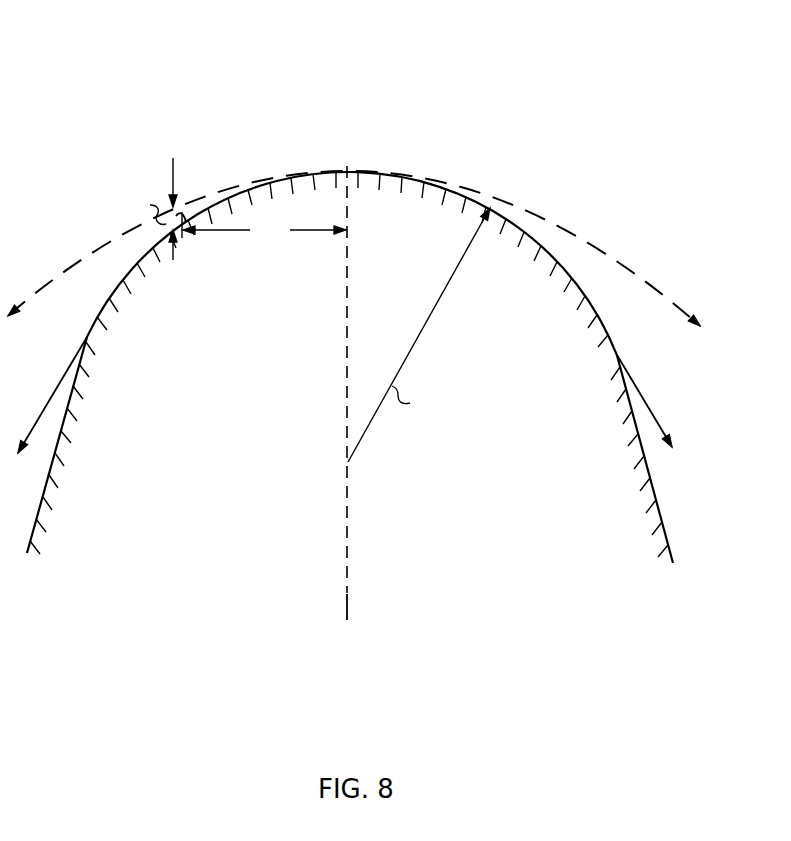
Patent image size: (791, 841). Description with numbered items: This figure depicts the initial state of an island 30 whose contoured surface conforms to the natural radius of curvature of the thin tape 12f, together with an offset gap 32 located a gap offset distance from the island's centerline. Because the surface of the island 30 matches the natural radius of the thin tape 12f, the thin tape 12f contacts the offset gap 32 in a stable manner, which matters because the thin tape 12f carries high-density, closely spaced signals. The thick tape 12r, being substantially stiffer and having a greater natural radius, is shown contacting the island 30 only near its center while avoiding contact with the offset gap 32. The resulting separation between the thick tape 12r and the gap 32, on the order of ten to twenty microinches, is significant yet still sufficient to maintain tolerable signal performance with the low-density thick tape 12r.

The island 30 is at (61, 91).
The offset gap 32 is at (180, 228).
The thick tape 12r is at (558, 226).
The thin tape 12f is at (640, 380).